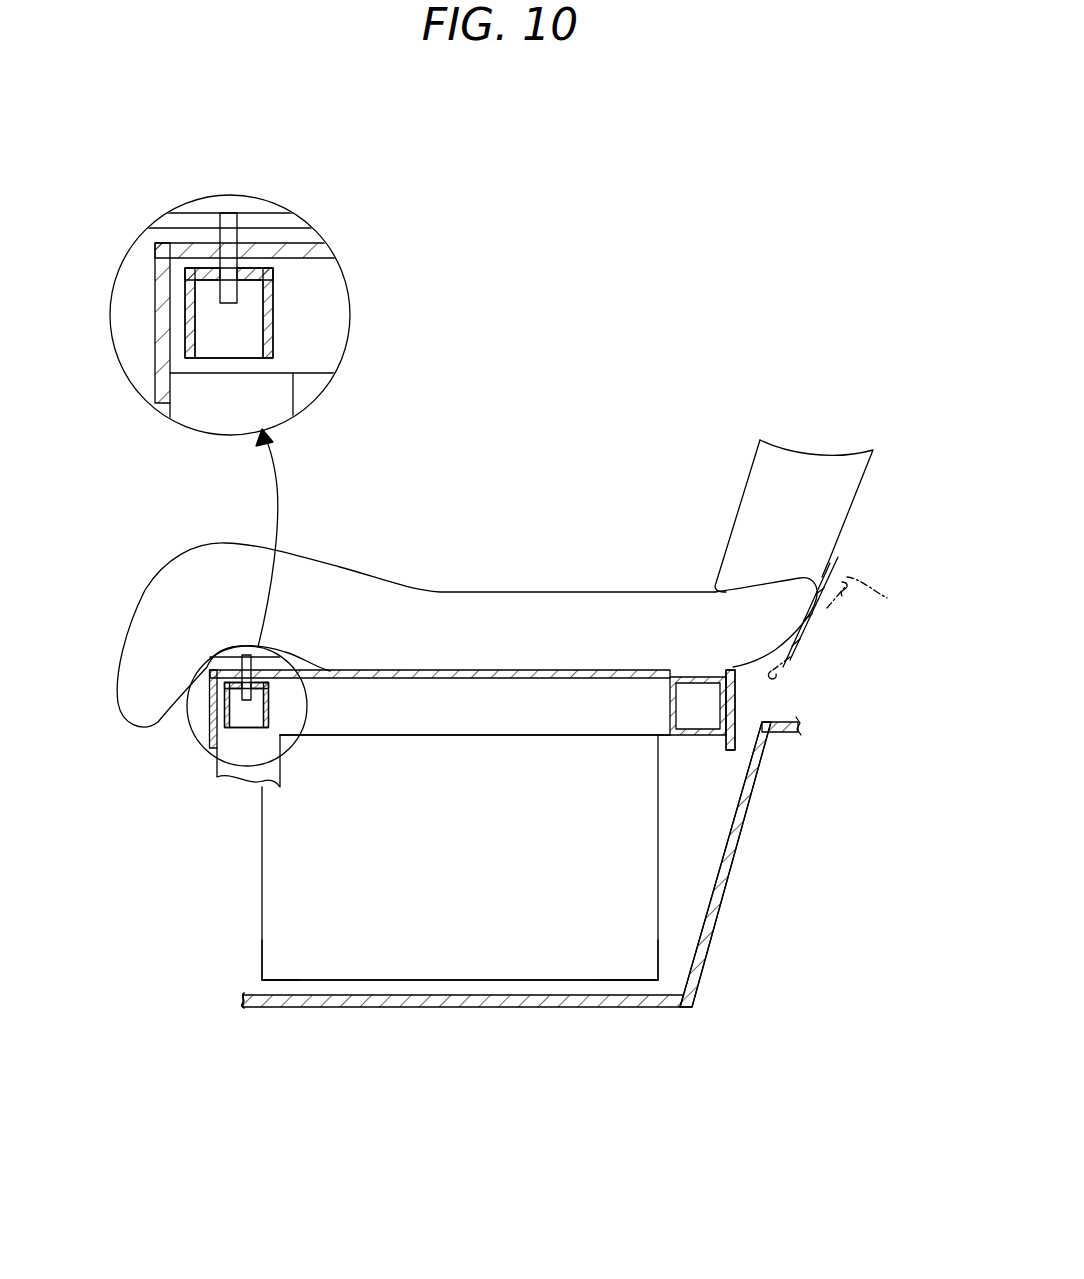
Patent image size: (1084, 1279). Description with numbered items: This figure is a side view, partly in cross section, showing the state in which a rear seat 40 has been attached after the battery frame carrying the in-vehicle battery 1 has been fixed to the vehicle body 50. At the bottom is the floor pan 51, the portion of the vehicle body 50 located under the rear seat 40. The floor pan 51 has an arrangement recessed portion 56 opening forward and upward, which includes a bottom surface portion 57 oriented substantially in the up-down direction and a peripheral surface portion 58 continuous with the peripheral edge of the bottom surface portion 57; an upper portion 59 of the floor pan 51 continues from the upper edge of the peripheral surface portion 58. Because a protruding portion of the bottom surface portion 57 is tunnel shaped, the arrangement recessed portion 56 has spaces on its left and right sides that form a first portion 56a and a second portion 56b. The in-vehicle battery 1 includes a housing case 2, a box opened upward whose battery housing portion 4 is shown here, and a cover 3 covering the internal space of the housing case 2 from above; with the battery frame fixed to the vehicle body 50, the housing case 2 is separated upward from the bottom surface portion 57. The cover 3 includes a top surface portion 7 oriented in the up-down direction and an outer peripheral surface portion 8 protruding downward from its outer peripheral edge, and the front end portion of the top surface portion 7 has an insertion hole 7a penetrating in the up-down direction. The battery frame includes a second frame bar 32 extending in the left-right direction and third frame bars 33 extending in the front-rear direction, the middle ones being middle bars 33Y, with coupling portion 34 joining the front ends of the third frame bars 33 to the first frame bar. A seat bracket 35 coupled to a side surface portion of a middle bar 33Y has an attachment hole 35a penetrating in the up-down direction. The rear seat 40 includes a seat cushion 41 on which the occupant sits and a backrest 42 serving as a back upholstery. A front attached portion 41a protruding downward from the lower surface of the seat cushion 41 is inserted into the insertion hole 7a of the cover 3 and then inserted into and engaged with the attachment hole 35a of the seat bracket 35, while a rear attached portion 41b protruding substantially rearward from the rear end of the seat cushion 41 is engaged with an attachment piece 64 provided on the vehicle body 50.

The in-vehicle battery 1 is at (280, 873).
The housing case 2 is at (280, 921).
The cover 3 is at (528, 675).
The battery housing portion 4 is at (275, 829).
The top surface portion 7 is at (322, 247).
The insertion hole 7a is at (229, 283).
The outer peripheral surface portion 8 is at (160, 345).
The second frame bar 32 is at (667, 703).
The third frame bar 33 is at (620, 700).
The middle bar 33Y is at (730, 710).
The coupling portion 34 is at (202, 420).
The seat bracket 35 is at (275, 330).
The attachment hole 35a is at (230, 284).
The rear seat 40 is at (432, 607).
The seat cushion 41 is at (202, 210).
The front attached portion 41a is at (218, 228).
The rear attached portion 41b is at (825, 570).
The backrest 42 is at (767, 477).
The vehicle body 50 is at (918, 610).
The floor pan 51 is at (720, 893).
The arrangement recessed portion 56 is at (674, 980).
The first portion 56a is at (252, 993).
The second portion 56b is at (243, 1000).
The bottom surface portion 57 is at (428, 998).
The peripheral surface portion 58 is at (738, 828).
The upper portion 59 is at (775, 723).
The attachment piece 64 is at (837, 578).